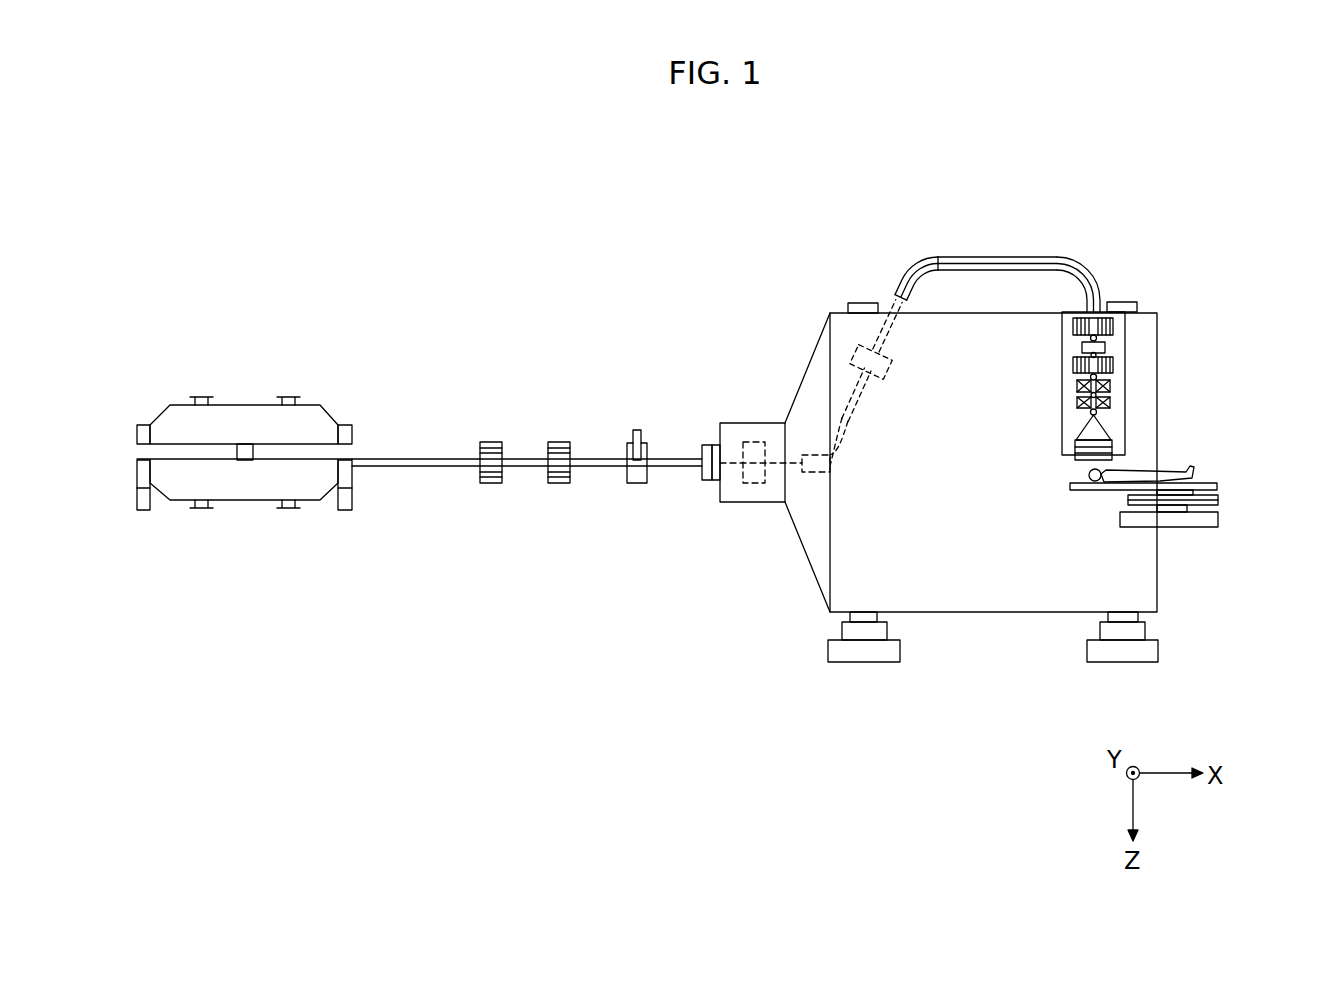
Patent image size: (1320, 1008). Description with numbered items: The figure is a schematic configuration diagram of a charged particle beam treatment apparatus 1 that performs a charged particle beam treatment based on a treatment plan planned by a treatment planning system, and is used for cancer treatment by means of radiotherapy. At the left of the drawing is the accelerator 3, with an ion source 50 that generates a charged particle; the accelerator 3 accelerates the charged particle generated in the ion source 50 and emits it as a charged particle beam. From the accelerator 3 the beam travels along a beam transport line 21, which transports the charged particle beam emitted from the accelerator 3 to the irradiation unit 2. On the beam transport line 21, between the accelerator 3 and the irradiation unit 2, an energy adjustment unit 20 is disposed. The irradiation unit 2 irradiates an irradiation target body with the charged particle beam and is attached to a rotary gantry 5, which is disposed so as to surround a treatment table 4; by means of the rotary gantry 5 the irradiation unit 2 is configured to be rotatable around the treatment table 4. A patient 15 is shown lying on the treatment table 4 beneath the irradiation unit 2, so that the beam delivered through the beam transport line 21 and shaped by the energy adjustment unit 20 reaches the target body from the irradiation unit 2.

The charged particle beam treatment apparatus 1 is at (216, 190).
The irradiation unit 2 is at (1131, 355).
The accelerator 3 is at (178, 403).
The treatment table 4 is at (1217, 487).
The rotary gantry 5 is at (1158, 576).
The patient 15 is at (1124, 467).
The energy adjustment unit 20 is at (630, 442).
The beam transport line 21 is at (1105, 188).
The ion source 50 is at (246, 444).